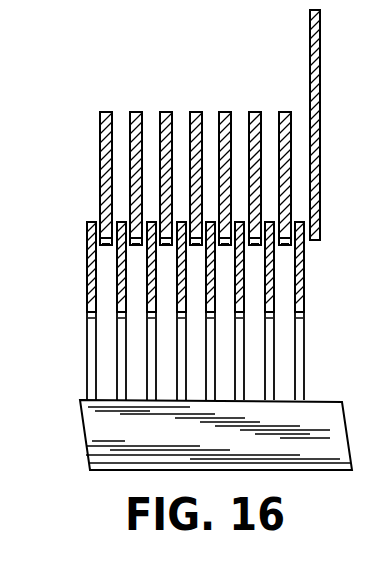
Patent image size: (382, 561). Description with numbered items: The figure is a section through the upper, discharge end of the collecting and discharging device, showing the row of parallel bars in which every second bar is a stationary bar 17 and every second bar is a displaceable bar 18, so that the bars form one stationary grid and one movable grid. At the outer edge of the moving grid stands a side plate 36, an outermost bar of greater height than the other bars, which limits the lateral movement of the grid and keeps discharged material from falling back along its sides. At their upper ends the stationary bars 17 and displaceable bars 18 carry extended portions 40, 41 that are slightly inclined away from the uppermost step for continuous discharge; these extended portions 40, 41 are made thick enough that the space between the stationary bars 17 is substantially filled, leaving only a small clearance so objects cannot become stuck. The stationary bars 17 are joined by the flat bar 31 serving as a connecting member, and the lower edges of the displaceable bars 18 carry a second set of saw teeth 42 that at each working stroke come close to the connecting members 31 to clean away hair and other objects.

The stationary bar 17 is at (86, 276).
The displaceable bar 18 is at (213, 113).
The flat bar 31 is at (98, 422).
The side plate 36 is at (311, 80).
The extended portion 40 is at (147, 308).
The extended portion 41 is at (153, 117).
The second set of saw teeth 42 is at (138, 246).